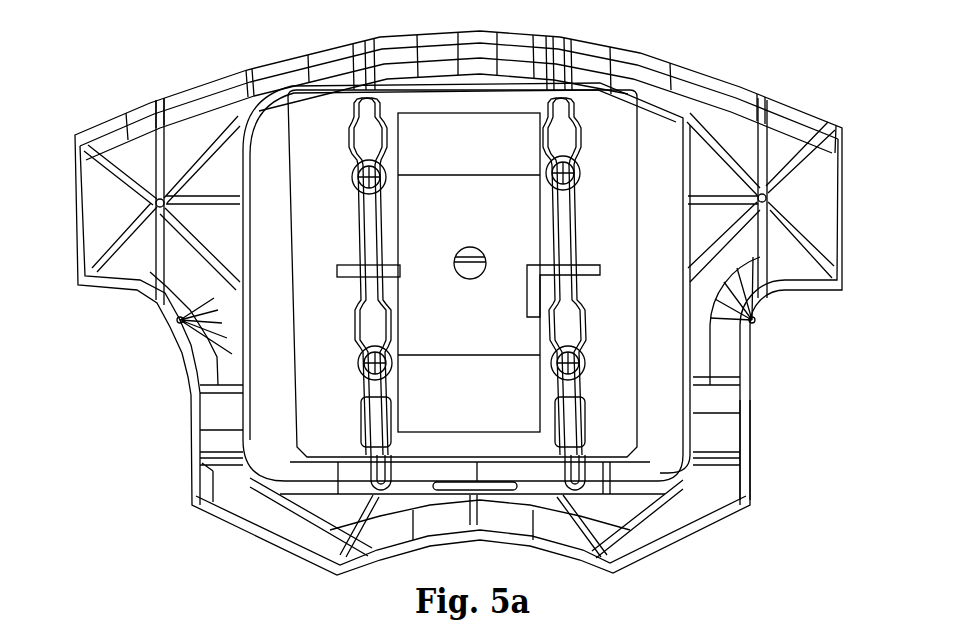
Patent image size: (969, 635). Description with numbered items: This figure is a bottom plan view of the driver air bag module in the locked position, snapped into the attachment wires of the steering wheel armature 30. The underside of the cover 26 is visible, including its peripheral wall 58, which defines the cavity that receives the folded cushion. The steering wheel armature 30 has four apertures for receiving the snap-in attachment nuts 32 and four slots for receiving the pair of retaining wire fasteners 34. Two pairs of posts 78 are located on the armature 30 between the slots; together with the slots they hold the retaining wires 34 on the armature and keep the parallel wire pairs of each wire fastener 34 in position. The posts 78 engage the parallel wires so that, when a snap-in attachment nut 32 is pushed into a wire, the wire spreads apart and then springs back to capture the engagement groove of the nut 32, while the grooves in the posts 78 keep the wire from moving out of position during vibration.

The cover 26 is at (783, 98).
The steering wheel armature 30 is at (605, 238).
The snap-in attachment nut 32 is at (360, 168).
The retaining wire fastener 34 is at (357, 228).
The peripheral wall 58 is at (752, 400).
The post 78 is at (392, 272).